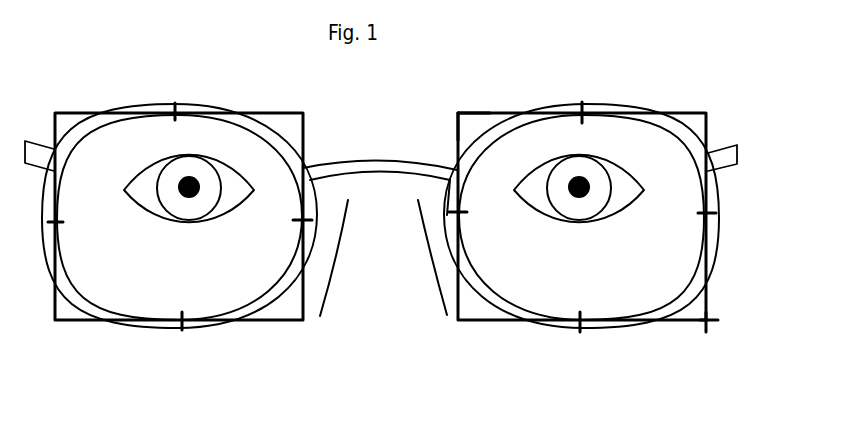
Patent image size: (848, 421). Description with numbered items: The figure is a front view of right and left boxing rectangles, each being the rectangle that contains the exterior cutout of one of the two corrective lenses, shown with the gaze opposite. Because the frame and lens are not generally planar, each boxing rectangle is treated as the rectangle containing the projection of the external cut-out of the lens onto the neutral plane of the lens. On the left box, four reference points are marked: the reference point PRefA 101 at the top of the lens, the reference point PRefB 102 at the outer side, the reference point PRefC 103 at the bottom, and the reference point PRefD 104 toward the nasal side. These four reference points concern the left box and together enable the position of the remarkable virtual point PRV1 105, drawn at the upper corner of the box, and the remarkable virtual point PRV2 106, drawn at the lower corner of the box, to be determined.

The reference point PRefA 101 is at (636, 88).
The reference point PRefB 102 is at (760, 197).
The reference point PRefC 103 is at (625, 353).
The reference point PRefD 104 is at (396, 275).
The remarkable virtual point PRV1 105 is at (423, 111).
The remarkable virtual point PRV2 106 is at (760, 306).